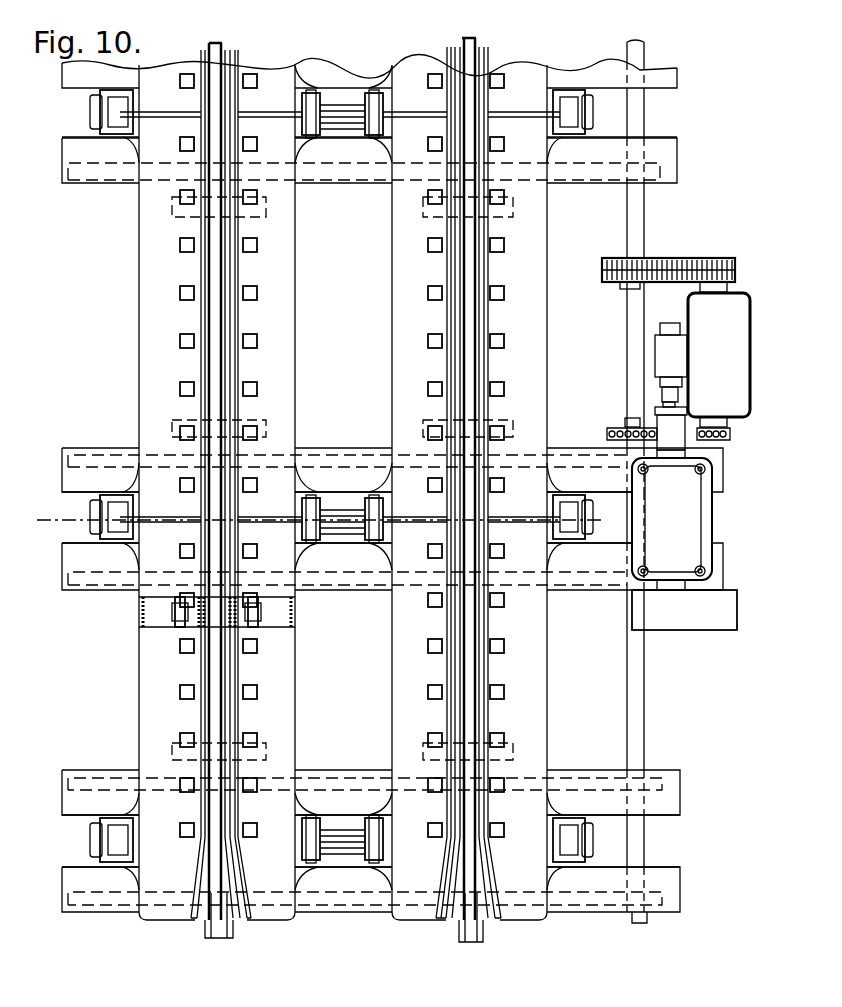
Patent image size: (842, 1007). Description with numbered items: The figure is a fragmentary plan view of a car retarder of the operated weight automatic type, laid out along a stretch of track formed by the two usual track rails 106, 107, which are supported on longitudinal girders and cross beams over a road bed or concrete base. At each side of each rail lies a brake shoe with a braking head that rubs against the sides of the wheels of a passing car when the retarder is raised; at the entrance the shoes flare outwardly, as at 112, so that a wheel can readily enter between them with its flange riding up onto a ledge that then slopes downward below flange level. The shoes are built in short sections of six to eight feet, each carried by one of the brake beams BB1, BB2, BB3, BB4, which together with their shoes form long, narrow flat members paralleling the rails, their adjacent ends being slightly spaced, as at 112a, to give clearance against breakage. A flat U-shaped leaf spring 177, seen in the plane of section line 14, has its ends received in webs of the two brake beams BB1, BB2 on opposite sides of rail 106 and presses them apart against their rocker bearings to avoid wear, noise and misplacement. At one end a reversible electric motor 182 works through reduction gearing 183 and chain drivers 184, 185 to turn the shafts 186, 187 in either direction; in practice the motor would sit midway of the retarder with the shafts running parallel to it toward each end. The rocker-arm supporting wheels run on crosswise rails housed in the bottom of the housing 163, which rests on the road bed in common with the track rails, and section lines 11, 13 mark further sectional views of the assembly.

The track rail 106 is at (220, 934).
The track rail 107 is at (468, 940).
The outward flare of brake shoe 112 is at (192, 917).
The spacing between adjacent brake beam ends 112a is at (135, 112).
The flat U-shaped leaf spring 177 is at (175, 612).
The electric motor 182 is at (698, 528).
The reduction gearing 183 is at (738, 333).
The chain driver 184 is at (677, 258).
The chain driver 185 is at (610, 428).
The shaft 186 is at (640, 48).
The shaft 187 is at (642, 708).
The housing 163 is at (667, 806).
The section line 11- 11 is at (605, 520).
The section line 13- 13 is at (695, 182).
The section line 14- 14 is at (322, 622).
The brake beam BB1 is at (139, 329).
The brake beam BB2 is at (295, 329).
The brake beam BB3 is at (392, 291).
The brake beam BB4 is at (547, 291).